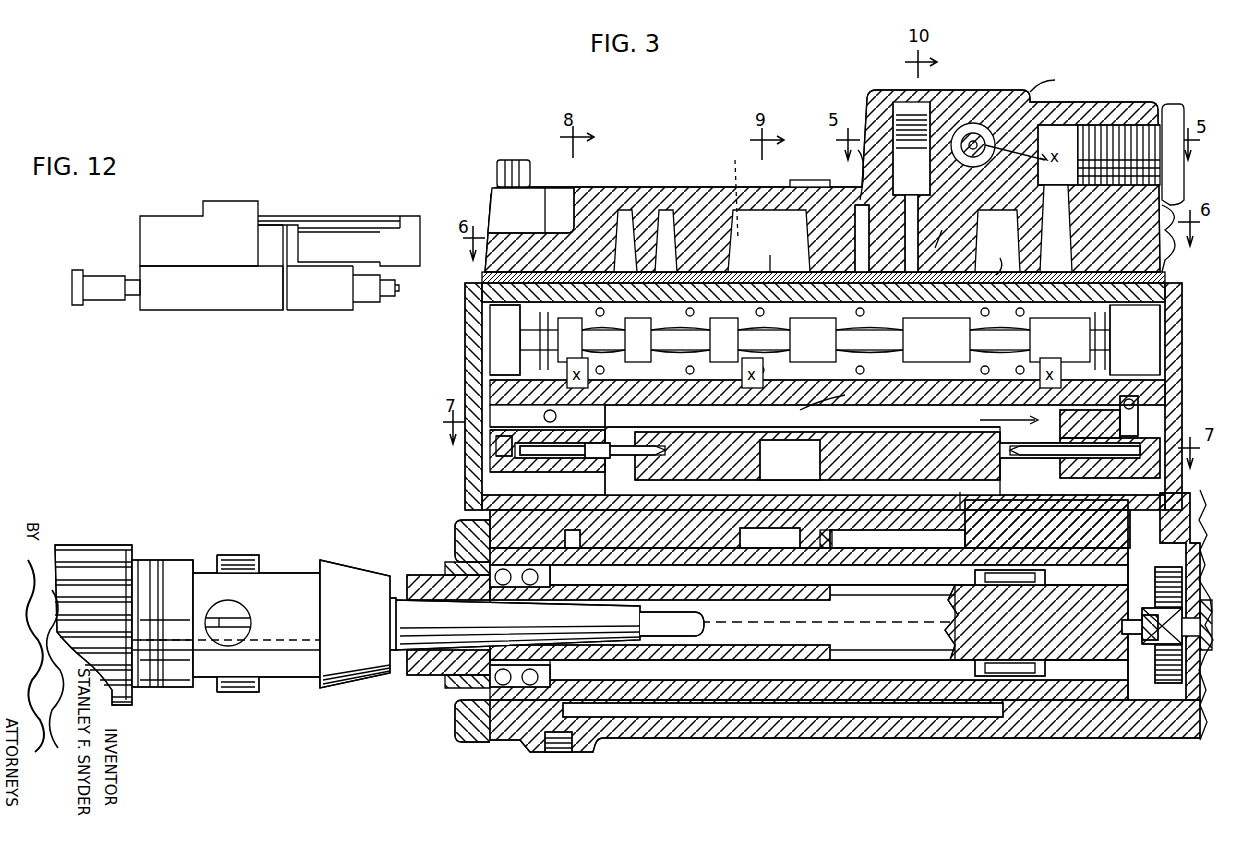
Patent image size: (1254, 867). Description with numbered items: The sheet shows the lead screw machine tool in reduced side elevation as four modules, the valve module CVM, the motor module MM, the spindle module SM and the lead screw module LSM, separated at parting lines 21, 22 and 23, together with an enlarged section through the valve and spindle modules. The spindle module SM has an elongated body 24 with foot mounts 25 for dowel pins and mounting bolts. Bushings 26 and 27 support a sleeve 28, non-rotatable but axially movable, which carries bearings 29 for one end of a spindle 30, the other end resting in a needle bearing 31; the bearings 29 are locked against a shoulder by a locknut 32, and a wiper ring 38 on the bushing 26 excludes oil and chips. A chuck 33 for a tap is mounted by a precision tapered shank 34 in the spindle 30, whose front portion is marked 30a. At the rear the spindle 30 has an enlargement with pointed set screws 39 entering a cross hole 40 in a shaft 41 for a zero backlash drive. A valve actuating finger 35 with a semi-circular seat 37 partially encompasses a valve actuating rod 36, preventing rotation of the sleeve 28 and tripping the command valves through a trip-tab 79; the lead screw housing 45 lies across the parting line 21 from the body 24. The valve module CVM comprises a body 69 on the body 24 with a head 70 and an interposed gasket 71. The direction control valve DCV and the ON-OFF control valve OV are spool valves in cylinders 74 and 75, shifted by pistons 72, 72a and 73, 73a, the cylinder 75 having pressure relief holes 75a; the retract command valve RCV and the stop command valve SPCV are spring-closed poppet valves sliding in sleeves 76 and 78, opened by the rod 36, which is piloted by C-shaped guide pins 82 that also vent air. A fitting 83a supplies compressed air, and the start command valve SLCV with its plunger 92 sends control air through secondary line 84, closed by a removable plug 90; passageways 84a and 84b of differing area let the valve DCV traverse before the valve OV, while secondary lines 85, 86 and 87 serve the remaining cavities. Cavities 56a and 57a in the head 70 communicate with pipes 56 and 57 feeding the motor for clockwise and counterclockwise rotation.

In FIG. 12, the parting line 21 is at (280, 295).
In FIG. 12, the parting line 22 is at (305, 240).
In FIG. 3, the parting line 23 is at (570, 508).
In FIG. 12, the parting line 23 is at (166, 266).
In FIG. 3, the elongated body 24 is at (665, 526).
In FIG. 12, the elongated body 24 is at (180, 310).
In FIG. 3, the foot mounts 25 is at (585, 752).
In FIG. 3, the bushing 26 is at (465, 530).
In FIG. 3, the bushing 27 is at (845, 549).
In FIG. 3, the sleeve 28 is at (940, 555).
In FIG. 3, the bearings 29 is at (520, 587).
In FIG. 3, the spindle 30 is at (832, 615).
In FIG. 3, the spindle nose 30a is at (405, 688).
In FIG. 3, the needle bearing 31 is at (1010, 585).
In FIG. 3, the locknut 32 is at (448, 572).
In FIG. 3, the chuck 33 is at (170, 578).
In FIG. 12, the chuck 33 is at (105, 305).
In FIG. 3, the tapered shank 34 is at (480, 625).
In FIG. 3, the valve actuating finger 35 is at (975, 520).
In FIG. 3, the valve actuating rod 36 is at (858, 463).
In FIG. 3, the semi-circular seat 37 is at (960, 495).
In FIG. 3, the wiper ring 38 is at (462, 735).
In FIG. 3, the pointed set screws 39 is at (1165, 575).
In FIG. 3, the cross hole 40 is at (1140, 630).
In FIG. 3, the shaft 41 is at (1196, 624).
In FIG. 12, the lead screw housing 45 is at (330, 302).
In FIG. 3, the pipe 56 is at (1175, 255).
In FIG. 3, the cavity 56a is at (736, 194).
In FIG. 12, the pipe 57 is at (378, 218).
In FIG. 3, the cavity 57a is at (618, 208).
In FIG. 3, the body 69 is at (778, 430).
In FIG. 12, the body 69 is at (168, 222).
In FIG. 3, the head 70 is at (840, 170).
In FIG. 3, the gasket 71 is at (552, 245).
In FIG. 3, the piston 72 is at (540, 340).
In FIG. 3, the piston 72a is at (782, 258).
In FIG. 3, the piston 73 is at (944, 241).
In FIG. 3, the piston 73a is at (1150, 332).
In FIG. 3, the cylinder 74 is at (745, 272).
In FIG. 3, the cylinder 75 is at (996, 258).
In FIG. 3, the pressure relief holes 75a is at (996, 420).
In FIG. 3, the sleeve 76 is at (605, 432).
In FIG. 3, the sleeve 78 is at (760, 478).
In FIG. 3, the trip-tab 79 is at (940, 428).
In FIG. 3, the guide pins 82 is at (658, 447).
In FIG. 3, the fitting 83a is at (1130, 125).
In FIG. 3, the secondary line 84 is at (880, 212).
In FIG. 3, the passageway 84a is at (822, 412).
In FIG. 3, the passageway 84b is at (880, 418).
In FIG. 3, the secondary line 85 is at (660, 208).
In FIG. 3, the secondary line 86 is at (1160, 360).
In FIG. 3, the secondary line 87 is at (488, 384).
In FIG. 3, the plug 90 is at (915, 100).
In FIG. 3, the valve plunger 92 is at (990, 120).
In FIG. 3, the valve module CVM is at (822, 181).
In FIG. 12, the valve module CVM is at (196, 249).
In FIG. 3, the direction control valve DCV is at (494, 329).
In FIG. 3, the retract command valve RCV is at (770, 459).
In FIG. 3, the stop command valve SPCV is at (1160, 462).
In FIG. 3, the start command valve SLCV is at (1059, 79).
In FIG. 3, the ON-OFF control valve OV is at (1075, 260).
In FIG. 3, the spindle module SM is at (800, 740).
In FIG. 12, the spindle module SM is at (213, 293).
In FIG. 12, the motor module MM is at (355, 255).
In FIG. 12, the lead screw module LSM is at (332, 298).